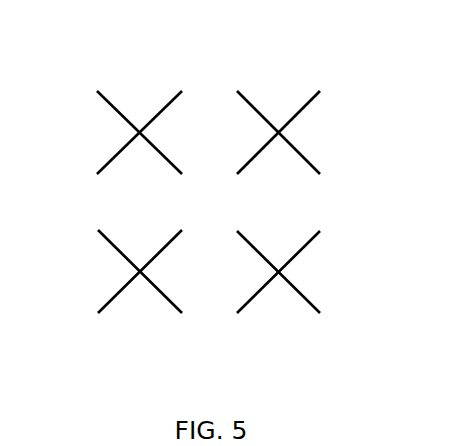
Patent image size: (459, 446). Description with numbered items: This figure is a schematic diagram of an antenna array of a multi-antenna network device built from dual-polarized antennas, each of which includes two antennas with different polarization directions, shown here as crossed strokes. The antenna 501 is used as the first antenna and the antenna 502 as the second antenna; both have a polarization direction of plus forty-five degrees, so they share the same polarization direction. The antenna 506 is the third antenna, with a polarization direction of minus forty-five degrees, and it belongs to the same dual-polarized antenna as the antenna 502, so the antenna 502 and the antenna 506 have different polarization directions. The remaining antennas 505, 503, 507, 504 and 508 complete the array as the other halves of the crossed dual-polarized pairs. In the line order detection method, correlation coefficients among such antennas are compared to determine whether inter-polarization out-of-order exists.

The antenna 501 is at (102, 95).
The second stroke of first X-shaped pattern 505 is at (177, 94).
The antenna 502 is at (241, 95).
The antenna 506 is at (315, 94).
The first stroke of third X-shaped pattern 503 is at (110, 301).
The second stroke of third X-shaped pattern 507 is at (175, 317).
The first stroke of fourth X-shaped pattern 504 is at (250, 300).
The second stroke of fourth X-shaped pattern 508 is at (314, 317).